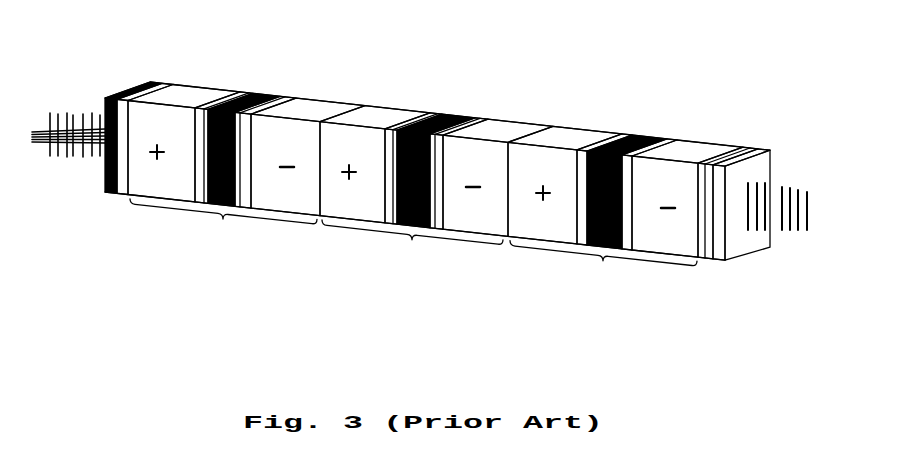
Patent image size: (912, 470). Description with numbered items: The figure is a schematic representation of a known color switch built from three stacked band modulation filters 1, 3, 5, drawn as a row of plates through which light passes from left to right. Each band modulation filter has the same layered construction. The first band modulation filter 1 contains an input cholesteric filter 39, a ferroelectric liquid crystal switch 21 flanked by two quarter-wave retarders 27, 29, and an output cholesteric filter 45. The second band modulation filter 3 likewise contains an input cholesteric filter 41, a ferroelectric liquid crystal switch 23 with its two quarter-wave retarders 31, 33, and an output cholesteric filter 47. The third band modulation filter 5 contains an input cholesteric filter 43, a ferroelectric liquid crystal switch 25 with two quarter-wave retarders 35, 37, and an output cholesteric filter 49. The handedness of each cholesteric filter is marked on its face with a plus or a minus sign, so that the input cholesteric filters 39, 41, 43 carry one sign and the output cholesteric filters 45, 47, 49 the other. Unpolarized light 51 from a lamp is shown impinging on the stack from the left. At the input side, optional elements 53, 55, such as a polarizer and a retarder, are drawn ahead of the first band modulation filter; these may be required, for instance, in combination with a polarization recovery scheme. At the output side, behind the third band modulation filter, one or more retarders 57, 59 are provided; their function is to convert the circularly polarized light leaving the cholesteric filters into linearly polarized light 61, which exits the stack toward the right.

The band modulation filter 1 is at (224, 176).
The band modulation filter 3 is at (414, 197).
The band modulation filter 5 is at (603, 215).
The ferroelectric liquid crystal switch 21 is at (270, 99).
The ferroelectric liquid crystal switch 23 is at (460, 118).
The ferroelectric liquid crystal switch 25 is at (652, 136).
The quarter-wave retarder 27 is at (250, 93).
The quarter-wave retarder 29 is at (294, 100).
The quarter-wave retarder 31 is at (437, 116).
The quarter-wave retarder 33 is at (482, 122).
The quarter-wave retarder 35 is at (630, 133).
The quarter-wave retarder 37 is at (677, 140).
The input cholesteric filter 39 is at (205, 87).
The input cholesteric filter 41 is at (398, 108).
The input cholesteric filter 43 is at (585, 132).
The output cholesteric filter 45 is at (328, 102).
The output cholesteric filter 47 is at (517, 121).
The output cholesteric filter 49 is at (708, 143).
The unpolarized light 51 is at (68, 145).
The optional element (polarizer) 53 is at (160, 82).
The optional element (retarder) 55 is at (170, 83).
The retarder 57 is at (752, 148).
The retarder 59 is at (765, 150).
The linearly polarized light 61 is at (783, 221).